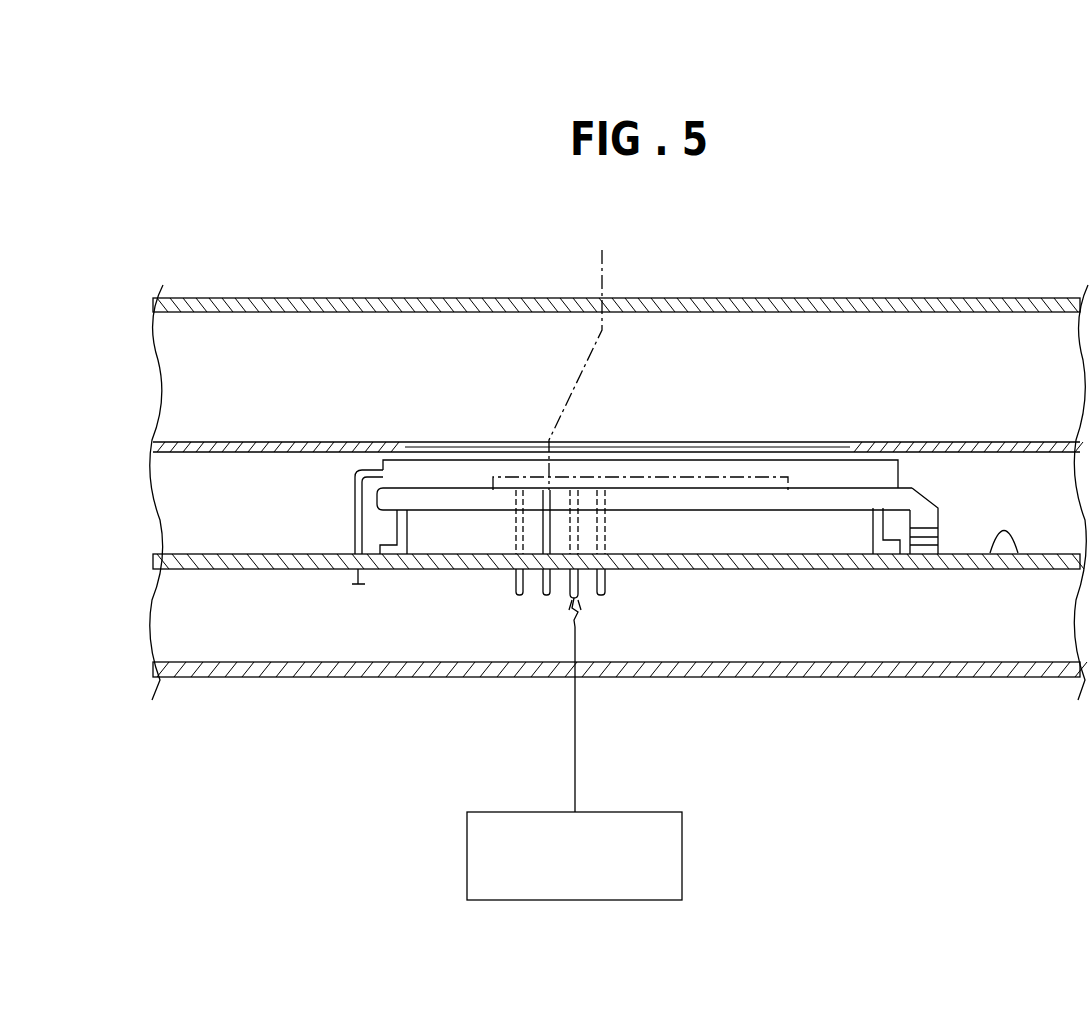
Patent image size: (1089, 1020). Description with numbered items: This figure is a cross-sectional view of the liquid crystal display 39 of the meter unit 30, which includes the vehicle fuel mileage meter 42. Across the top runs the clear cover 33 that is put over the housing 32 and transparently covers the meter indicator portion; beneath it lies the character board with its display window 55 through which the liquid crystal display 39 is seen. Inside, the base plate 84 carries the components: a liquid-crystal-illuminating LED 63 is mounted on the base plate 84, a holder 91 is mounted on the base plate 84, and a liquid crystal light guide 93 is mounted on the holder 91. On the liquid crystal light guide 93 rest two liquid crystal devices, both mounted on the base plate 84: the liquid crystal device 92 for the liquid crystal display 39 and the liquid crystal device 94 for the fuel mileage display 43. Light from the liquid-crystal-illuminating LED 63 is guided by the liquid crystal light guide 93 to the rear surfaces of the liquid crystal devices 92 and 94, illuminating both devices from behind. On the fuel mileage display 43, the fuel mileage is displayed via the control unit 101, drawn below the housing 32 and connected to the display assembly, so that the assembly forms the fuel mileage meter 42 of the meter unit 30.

The meter unit 30 is at (308, 102).
The liquid crystal display 39 is at (323, 222).
The clear cover 33 is at (906, 298).
The display window 55 is at (858, 447).
The liquid crystal device 92 is at (618, 443).
The liquid crystal light guide 93 is at (923, 503).
The liquid crystal device 94 is at (683, 479).
The fuel mileage display 43 is at (582, 355).
The holder 91 is at (400, 525).
The liquid-crystal-illuminating LED 63 is at (925, 570).
The base plate 84 is at (1018, 553).
The housing 32 is at (1034, 677).
The vehicle fuel mileage meter 42 is at (513, 713).
The control unit 101 is at (652, 812).